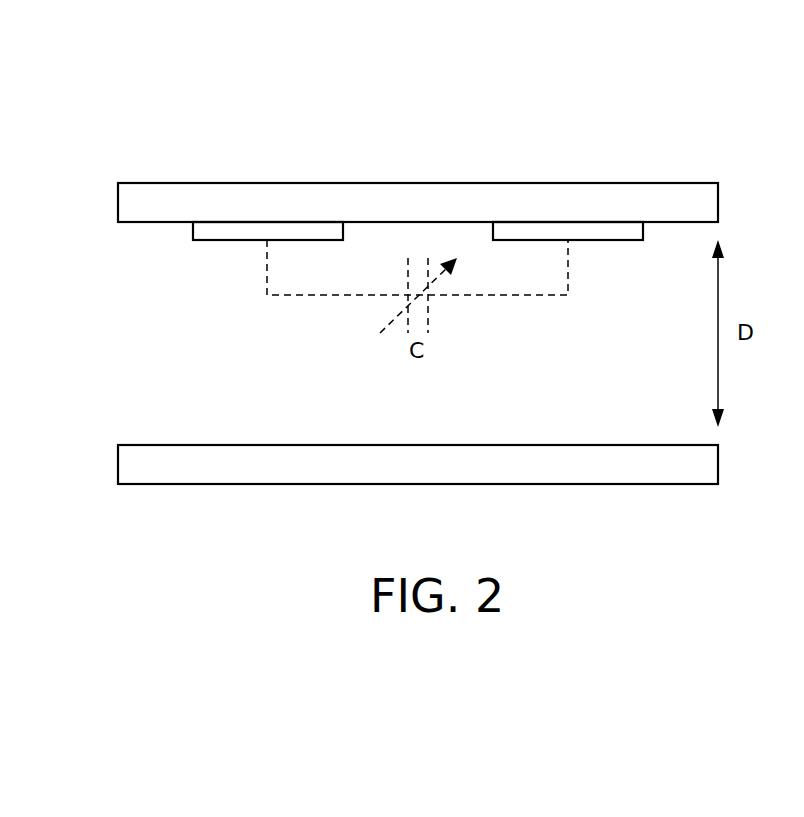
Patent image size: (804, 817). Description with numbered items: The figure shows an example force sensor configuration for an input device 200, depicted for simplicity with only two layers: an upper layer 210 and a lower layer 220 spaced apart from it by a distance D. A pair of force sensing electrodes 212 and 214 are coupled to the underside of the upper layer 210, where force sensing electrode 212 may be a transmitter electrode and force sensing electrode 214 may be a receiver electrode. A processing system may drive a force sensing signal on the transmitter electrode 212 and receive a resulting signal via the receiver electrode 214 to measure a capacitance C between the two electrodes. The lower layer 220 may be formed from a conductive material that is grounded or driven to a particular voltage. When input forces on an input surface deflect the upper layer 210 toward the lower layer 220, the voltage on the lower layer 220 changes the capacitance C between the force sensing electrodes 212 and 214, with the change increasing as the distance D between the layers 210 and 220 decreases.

The input device 200 is at (168, 110).
The upper layer 210 is at (439, 213).
The force sensing electrode 212 is at (230, 243).
The force sensing electrode 214 is at (606, 243).
The lower layer 220 is at (439, 475).